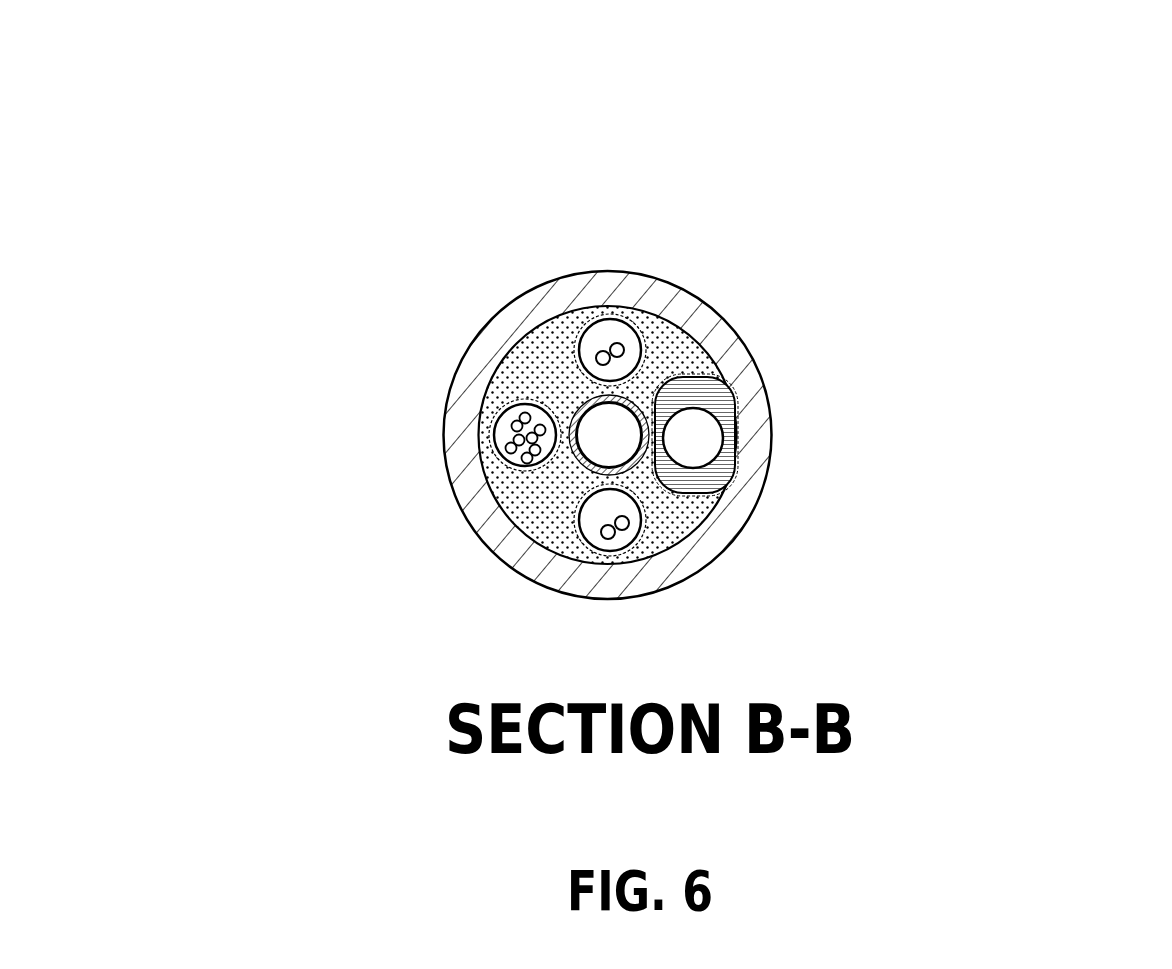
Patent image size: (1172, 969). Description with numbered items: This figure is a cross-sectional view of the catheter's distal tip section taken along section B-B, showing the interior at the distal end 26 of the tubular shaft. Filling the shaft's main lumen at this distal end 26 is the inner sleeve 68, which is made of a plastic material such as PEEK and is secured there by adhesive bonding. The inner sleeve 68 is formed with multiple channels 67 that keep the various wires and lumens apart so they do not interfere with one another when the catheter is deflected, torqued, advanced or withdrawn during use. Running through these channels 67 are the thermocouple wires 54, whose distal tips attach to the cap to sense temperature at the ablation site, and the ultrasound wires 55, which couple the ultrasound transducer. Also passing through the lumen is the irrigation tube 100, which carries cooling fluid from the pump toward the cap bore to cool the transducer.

The distal end 26 is at (752, 470).
The thermocouple wires 54 is at (507, 433).
The ultrasound wires 55 is at (602, 353).
The channels 67 is at (622, 313).
The inner sleeve 68 is at (672, 357).
The irrigation tube 100 is at (690, 457).